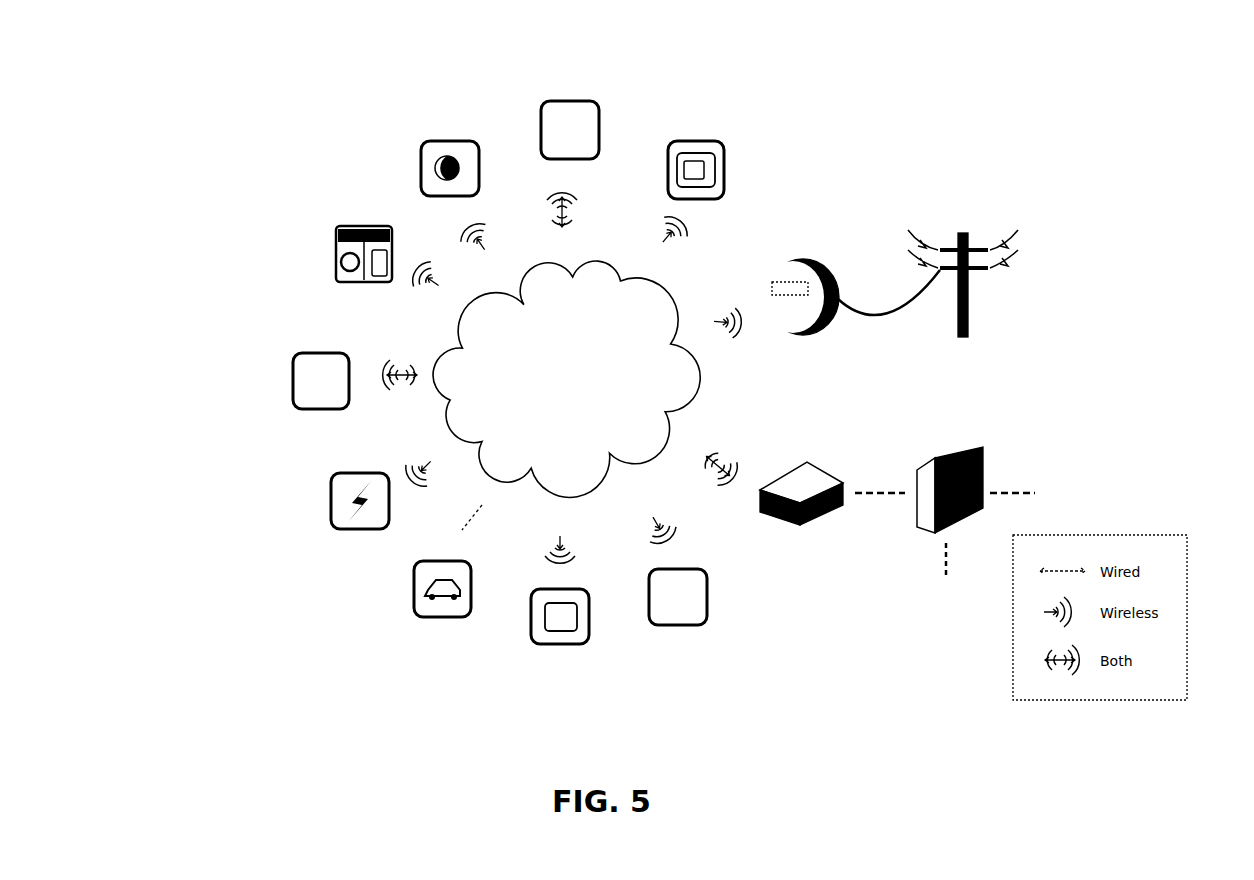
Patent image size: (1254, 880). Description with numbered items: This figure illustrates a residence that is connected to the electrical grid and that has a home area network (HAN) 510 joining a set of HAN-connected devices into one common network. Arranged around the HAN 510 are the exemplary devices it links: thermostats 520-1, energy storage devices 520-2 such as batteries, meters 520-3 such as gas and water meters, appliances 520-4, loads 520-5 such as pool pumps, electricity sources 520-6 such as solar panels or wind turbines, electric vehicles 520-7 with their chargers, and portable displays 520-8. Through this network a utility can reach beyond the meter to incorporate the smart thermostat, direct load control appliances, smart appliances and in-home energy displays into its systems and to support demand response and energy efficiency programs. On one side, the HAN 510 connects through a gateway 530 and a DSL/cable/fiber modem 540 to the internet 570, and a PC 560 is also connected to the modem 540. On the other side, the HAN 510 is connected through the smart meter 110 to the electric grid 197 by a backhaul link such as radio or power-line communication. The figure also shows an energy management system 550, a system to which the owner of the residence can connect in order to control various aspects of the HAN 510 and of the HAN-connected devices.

The home area network (HAN) 510 is at (566, 379).
The thermostats 520-1 is at (773, 103).
The energy storage devices 520-2 is at (607, 66).
The meters 520-3 is at (355, 118).
The appliances 520-4 is at (270, 225).
The loads 520-5 is at (175, 358).
The electricity sources 520-6 is at (206, 500).
The electric vehicles 520-7 is at (428, 612).
The portable displays 520-8 is at (510, 684).
The smart meter 110 is at (834, 252).
The electric grid 197 is at (985, 217).
The gateway 530 is at (800, 463).
The DSL/cable/fiber modem 540 is at (970, 452).
The energy management system 550 is at (703, 700).
The PC 560 is at (930, 677).
The internet 570 is at (1115, 488).